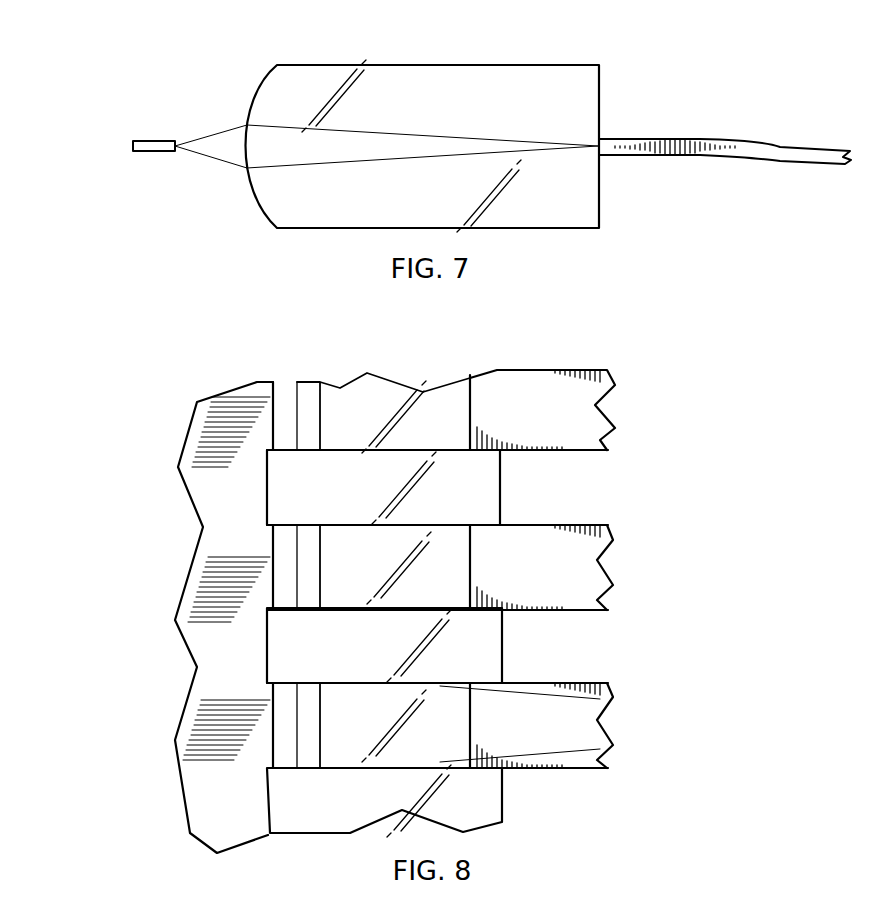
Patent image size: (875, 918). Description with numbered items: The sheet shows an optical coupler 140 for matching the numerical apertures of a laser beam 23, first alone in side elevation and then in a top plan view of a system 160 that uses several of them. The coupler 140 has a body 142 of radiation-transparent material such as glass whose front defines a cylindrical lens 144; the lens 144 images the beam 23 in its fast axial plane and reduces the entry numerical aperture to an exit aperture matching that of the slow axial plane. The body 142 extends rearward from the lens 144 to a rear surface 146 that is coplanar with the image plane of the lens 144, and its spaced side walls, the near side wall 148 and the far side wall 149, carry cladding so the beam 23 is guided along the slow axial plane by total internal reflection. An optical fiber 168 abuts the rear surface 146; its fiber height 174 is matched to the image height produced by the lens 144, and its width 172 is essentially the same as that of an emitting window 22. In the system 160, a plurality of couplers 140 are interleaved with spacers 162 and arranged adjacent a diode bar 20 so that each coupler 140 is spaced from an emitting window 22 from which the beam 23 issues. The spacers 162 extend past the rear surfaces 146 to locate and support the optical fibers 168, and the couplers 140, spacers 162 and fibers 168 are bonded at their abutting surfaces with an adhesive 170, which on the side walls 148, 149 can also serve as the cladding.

In FIG. 7, the diode bar 20 is at (155, 140).
In FIG. 8, the diode bar 20 is at (190, 497).
In FIG. 8, the emitting window 22 is at (273, 566).
In FIG. 7, the laser beam 23 is at (212, 130).
In FIG. 8, the laser beam 23 is at (293, 764).
In FIG. 7, the optical coupler 140 is at (472, 63).
In FIG. 8, the optical coupler 140 is at (417, 522).
In FIG. 7, the body 142 is at (315, 228).
In FIG. 7, the cylindrical lens 144 is at (247, 172).
In FIG. 8, the cylindrical lens 144 is at (303, 592).
In FIG. 7, the rear surface 146 is at (599, 194).
In FIG. 8, the rear surface 146 is at (473, 548).
In FIG. 7, the side wall 148 is at (553, 83).
In FIG. 8, the side wall 148 is at (367, 518).
In FIG. 8, the side wall 149 is at (380, 612).
In FIG. 8, the system 160 is at (645, 457).
In FIG. 8, the spacer 162 is at (502, 657).
In FIG. 7, the optical fiber 168 is at (712, 161).
In FIG. 8, the optical fiber 168 is at (610, 570).
In FIG. 8, the adhesive 170 is at (330, 522).
In FIG. 8, the width of optical fiber 172 is at (592, 610).
In FIG. 7, the fiber height 174 is at (660, 165).